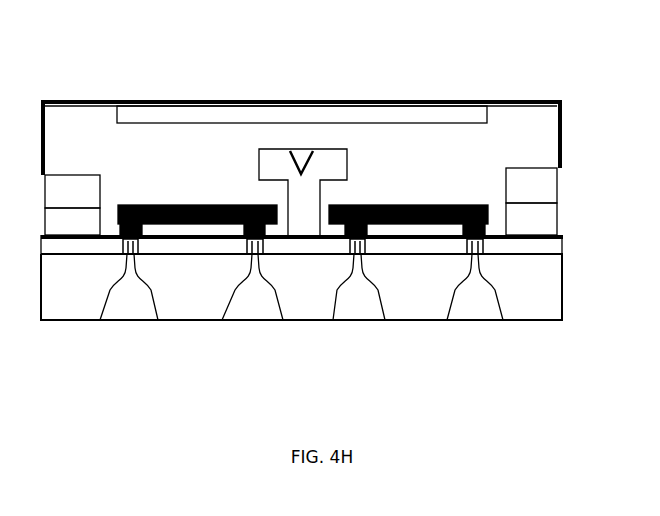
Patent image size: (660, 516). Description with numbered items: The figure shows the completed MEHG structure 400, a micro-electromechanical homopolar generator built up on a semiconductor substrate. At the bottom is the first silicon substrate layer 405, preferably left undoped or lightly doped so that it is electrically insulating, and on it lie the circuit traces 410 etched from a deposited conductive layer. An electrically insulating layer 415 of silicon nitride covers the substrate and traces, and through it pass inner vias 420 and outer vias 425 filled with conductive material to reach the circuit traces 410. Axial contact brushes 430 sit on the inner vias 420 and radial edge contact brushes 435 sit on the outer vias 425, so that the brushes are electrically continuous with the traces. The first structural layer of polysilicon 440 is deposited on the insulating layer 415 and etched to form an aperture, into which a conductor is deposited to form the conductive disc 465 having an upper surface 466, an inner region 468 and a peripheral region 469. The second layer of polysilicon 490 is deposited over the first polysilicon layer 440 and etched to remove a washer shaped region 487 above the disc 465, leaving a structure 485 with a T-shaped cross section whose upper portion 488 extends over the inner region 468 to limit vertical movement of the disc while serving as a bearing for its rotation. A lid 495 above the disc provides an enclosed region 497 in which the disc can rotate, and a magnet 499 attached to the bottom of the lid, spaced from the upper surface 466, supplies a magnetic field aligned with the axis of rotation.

The MEHG structure 400 is at (162, 78).
The first silicon substrate layer 405 is at (557, 288).
The circuit traces 410 is at (553, 248).
The electrically insulating layer 415 is at (555, 237).
The inner vias 420 is at (283, 323).
The outer vias 425 is at (159, 323).
The axial contact brushes 430 is at (222, 323).
The radial edge contact brushes 435 is at (100, 323).
The first structural layer of polysilicon 440 is at (540, 222).
The conductive disc 465 is at (185, 205).
The upper surface 466 is at (440, 204).
The inner region 468 is at (365, 204).
The peripheral region 469 is at (470, 204).
The structure 485 is at (303, 217).
The washer shaped region 487 is at (150, 187).
The upper portion 488 is at (325, 175).
The second layer of polysilicon 490 is at (90, 192).
The lid 495 is at (499, 98).
The enclosed region 497 is at (533, 124).
The magnet 499 is at (369, 108).